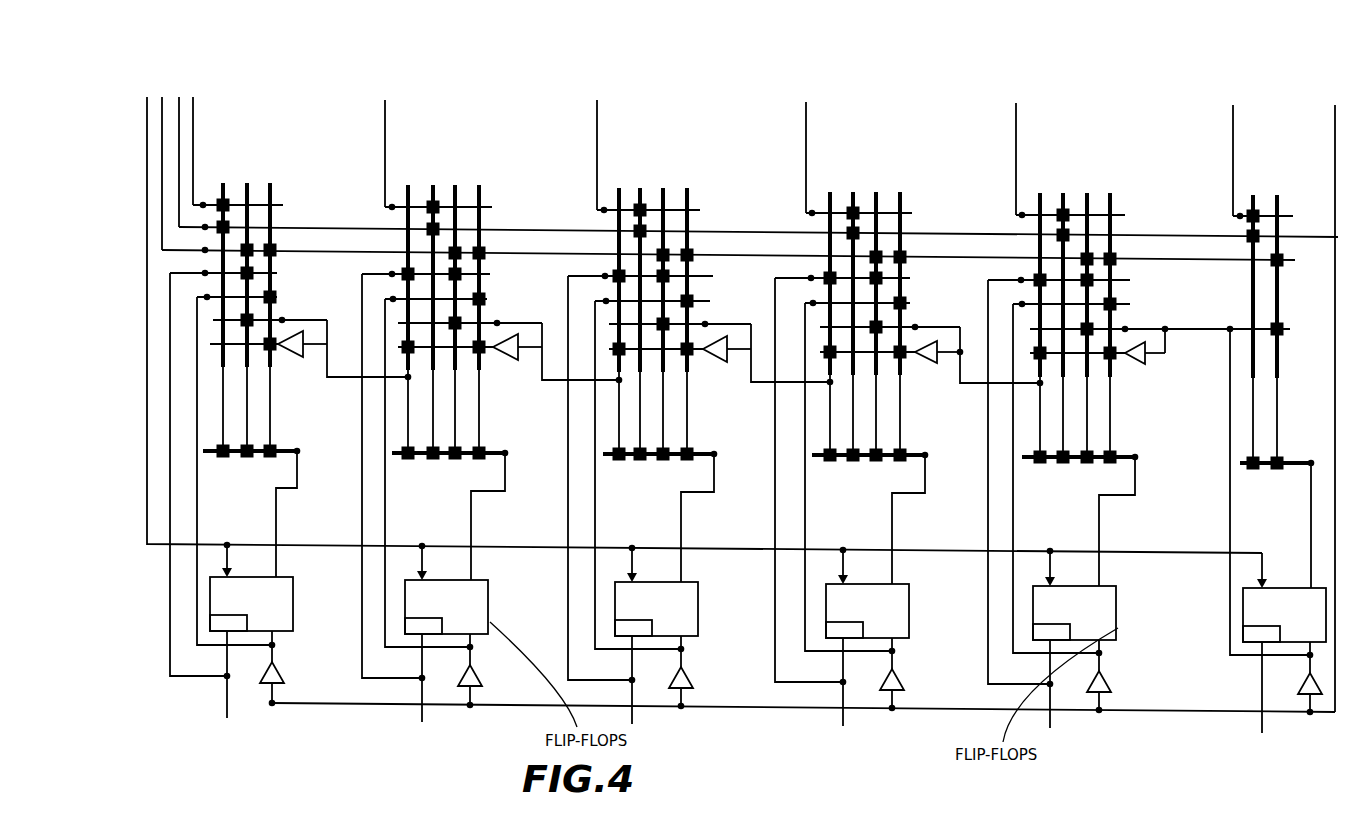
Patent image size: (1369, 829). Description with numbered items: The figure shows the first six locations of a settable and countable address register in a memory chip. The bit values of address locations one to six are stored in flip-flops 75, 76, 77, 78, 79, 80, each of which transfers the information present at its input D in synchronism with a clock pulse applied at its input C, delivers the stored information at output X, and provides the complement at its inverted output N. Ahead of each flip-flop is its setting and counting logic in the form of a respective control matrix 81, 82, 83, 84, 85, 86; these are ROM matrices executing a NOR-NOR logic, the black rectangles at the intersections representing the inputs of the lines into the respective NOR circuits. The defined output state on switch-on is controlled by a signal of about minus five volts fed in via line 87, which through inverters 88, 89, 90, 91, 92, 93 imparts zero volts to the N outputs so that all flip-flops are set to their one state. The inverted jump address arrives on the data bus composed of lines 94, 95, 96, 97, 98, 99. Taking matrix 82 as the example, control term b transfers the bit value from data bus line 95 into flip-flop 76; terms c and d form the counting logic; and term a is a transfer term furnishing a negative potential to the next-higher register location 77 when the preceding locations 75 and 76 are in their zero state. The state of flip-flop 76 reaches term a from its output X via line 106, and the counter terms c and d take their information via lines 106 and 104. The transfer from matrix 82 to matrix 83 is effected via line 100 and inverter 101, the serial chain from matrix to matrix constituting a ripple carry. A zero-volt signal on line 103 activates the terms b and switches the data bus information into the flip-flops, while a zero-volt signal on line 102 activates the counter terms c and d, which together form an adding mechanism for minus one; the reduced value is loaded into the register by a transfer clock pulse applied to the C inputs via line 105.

The line 105 is at (148, 102).
The line 102 is at (163, 120).
The line 103 is at (180, 127).
The data bus line 99 is at (193, 147).
The data bus line 98 is at (388, 115).
The data bus line 97 is at (600, 117).
The data bus line 96 is at (809, 150).
The data bus line 95 is at (1019, 140).
The data bus line 94 is at (1233, 143).
The line 87 is at (1335, 150).
The control matrix 86 is at (258, 190).
The control matrix 85 is at (442, 188).
The control matrix 84 is at (652, 188).
The control matrix 83 is at (866, 190).
The control matrix 82 is at (1075, 191).
The control matrix 81 is at (1262, 203).
The flip-flop 80 is at (284, 627).
The flip-flop 79 is at (484, 630).
The flip-flop 78 is at (694, 632).
The flip-flop 77 is at (905, 634).
The flip-flop 76 is at (1118, 634).
The flip-flop 75 is at (1248, 619).
The inverter 93 is at (284, 674).
The inverter 92 is at (482, 677).
The inverter 91 is at (693, 679).
The inverter 90 is at (904, 681).
The inverter 89 is at (1111, 683).
The inverter 88 is at (1304, 686).
The inverter 101 is at (930, 361).
The line 100 is at (977, 384).
The line 106 is at (986, 516).
The line 104 is at (1015, 518).